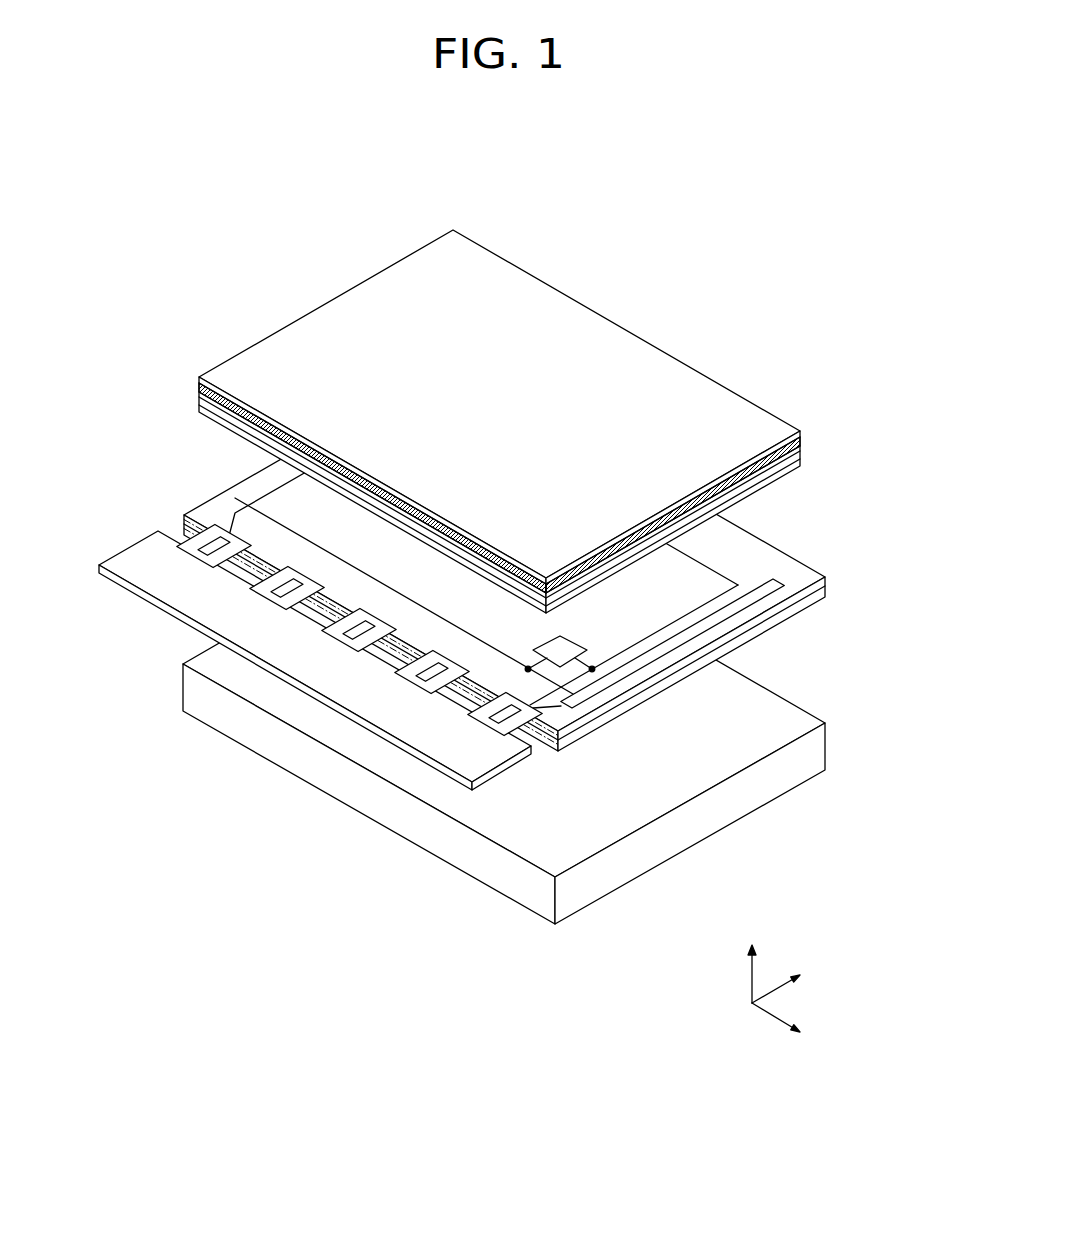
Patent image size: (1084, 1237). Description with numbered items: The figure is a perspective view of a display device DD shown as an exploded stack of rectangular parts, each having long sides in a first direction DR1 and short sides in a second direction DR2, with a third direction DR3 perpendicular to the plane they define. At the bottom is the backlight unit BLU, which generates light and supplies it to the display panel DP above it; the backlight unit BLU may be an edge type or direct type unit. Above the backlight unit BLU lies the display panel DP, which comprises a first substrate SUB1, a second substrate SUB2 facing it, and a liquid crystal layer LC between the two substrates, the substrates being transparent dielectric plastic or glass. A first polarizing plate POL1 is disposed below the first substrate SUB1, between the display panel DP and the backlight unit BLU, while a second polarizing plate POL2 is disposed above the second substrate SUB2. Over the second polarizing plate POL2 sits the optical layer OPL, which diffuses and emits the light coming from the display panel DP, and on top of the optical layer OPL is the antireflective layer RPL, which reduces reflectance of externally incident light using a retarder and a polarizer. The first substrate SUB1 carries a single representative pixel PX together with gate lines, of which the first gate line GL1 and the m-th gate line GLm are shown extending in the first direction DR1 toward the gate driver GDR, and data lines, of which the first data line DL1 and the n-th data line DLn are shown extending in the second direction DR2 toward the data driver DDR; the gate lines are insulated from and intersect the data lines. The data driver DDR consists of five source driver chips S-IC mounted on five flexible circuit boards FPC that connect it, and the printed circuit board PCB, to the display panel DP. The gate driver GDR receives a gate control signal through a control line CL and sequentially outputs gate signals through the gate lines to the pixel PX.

The display device DD is at (555, 412).
The antireflective layer RPL is at (802, 434).
The optical layer OPL is at (803, 441).
The second polarizing plate POL2 is at (803, 448).
The second substrate SUB2 is at (802, 455).
The display panel DP is at (916, 453).
The liquid crystal layer LC is at (798, 543).
The first substrate SUB1 is at (825, 588).
The first polarizing plate POL1 is at (823, 596).
The gate driver GDR is at (740, 605).
The backlight unit BLU is at (810, 752).
The printed circuit board PCB is at (127, 562).
The data driver DDR is at (292, 594).
The source driver chip S-IC is at (196, 549).
The flexible circuit board FPC is at (215, 565).
The n-th data line DLn is at (282, 489).
The first gate line GL1 is at (397, 590).
The m-th gate line GLm is at (707, 556).
The first data line DL1 is at (667, 626).
The pixel PX is at (560, 654).
The control line CL is at (567, 707).
The first direction DR1 is at (797, 1025).
The second direction DR2 is at (797, 983).
The third direction DR3 is at (752, 961).